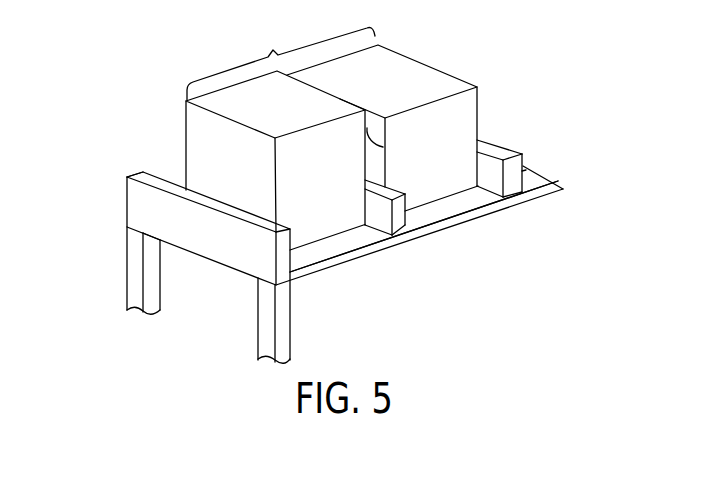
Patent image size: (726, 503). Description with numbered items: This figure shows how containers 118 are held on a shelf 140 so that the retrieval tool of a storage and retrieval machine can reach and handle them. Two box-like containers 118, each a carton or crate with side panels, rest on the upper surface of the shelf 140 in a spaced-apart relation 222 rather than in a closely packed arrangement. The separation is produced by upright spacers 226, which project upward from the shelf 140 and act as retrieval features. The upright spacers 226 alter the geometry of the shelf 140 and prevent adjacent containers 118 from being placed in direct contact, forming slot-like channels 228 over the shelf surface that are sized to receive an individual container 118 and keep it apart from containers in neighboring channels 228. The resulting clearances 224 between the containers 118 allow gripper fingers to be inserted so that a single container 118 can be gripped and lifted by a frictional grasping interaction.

The container 118 is at (418, 70).
The spaced-apart relation 222 is at (281, 56).
The shelf 140 is at (466, 224).
The slot-like channel 228 is at (339, 247).
The upright spacer 226 is at (504, 150).
The clearance 224 is at (385, 148).